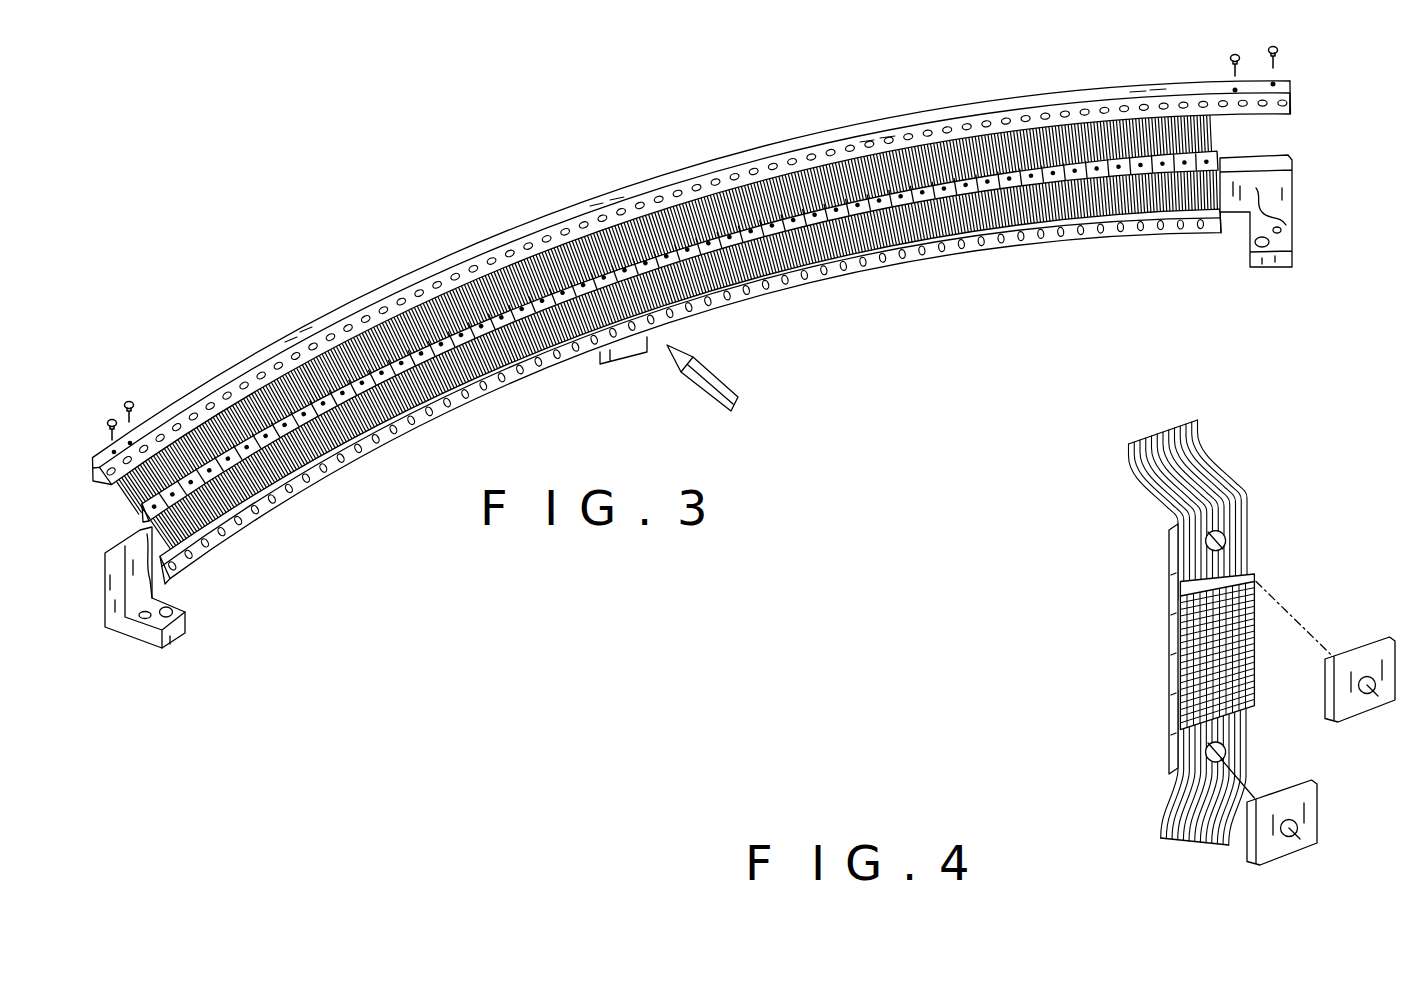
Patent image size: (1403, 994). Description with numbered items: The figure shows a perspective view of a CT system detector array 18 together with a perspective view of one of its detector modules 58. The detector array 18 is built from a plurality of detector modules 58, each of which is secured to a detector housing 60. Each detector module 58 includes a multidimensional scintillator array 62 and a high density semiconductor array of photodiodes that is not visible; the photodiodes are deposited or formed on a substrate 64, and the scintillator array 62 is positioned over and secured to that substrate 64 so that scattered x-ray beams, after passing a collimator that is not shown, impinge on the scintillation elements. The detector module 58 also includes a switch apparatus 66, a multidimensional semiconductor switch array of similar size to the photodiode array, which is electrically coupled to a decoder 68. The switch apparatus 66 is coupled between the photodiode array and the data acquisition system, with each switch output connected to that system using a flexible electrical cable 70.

In FIG. 3, the detector array 18 is at (652, 148).
In FIG. 3, the detector module 58 is at (327, 443).
In FIG. 4, the detector module 58 is at (1151, 728).
In FIG. 3, the detector housing 60 is at (176, 634).
In FIG. 4, the scintillator array 62 is at (1173, 661).
In FIG. 4, the substrate 64 is at (1156, 572).
In FIG. 4, the switch apparatus 66 is at (1245, 563).
In FIG. 4, the decoder 68 is at (1260, 574).
In FIG. 4, the flexible electrical cable 70 is at (1227, 470).